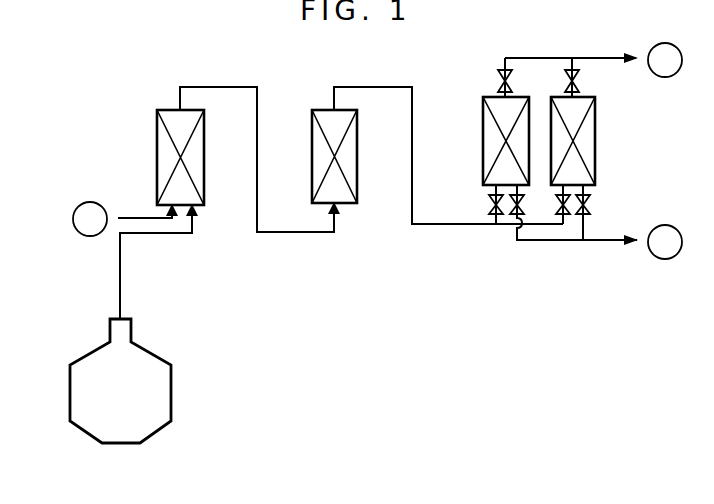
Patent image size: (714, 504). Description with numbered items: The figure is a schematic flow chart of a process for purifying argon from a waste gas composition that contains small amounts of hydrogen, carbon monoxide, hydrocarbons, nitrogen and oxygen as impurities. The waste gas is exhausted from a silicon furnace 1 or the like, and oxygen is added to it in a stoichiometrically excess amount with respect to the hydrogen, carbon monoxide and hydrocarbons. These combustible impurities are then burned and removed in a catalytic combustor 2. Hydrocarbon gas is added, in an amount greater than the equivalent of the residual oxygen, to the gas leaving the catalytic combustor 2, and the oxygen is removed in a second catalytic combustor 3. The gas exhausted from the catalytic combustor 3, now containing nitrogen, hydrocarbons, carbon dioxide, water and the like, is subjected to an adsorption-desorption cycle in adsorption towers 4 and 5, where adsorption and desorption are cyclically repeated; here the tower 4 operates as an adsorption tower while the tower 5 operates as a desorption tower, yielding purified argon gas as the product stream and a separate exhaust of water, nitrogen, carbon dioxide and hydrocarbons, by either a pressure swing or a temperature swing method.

The silicon furnace 1 is at (70, 392).
The catalytic combustor 2 is at (157, 137).
The catalytic combustor 3 is at (312, 134).
The adsorption tower 4 is at (483, 134).
The adsorption tower 5 is at (595, 133).